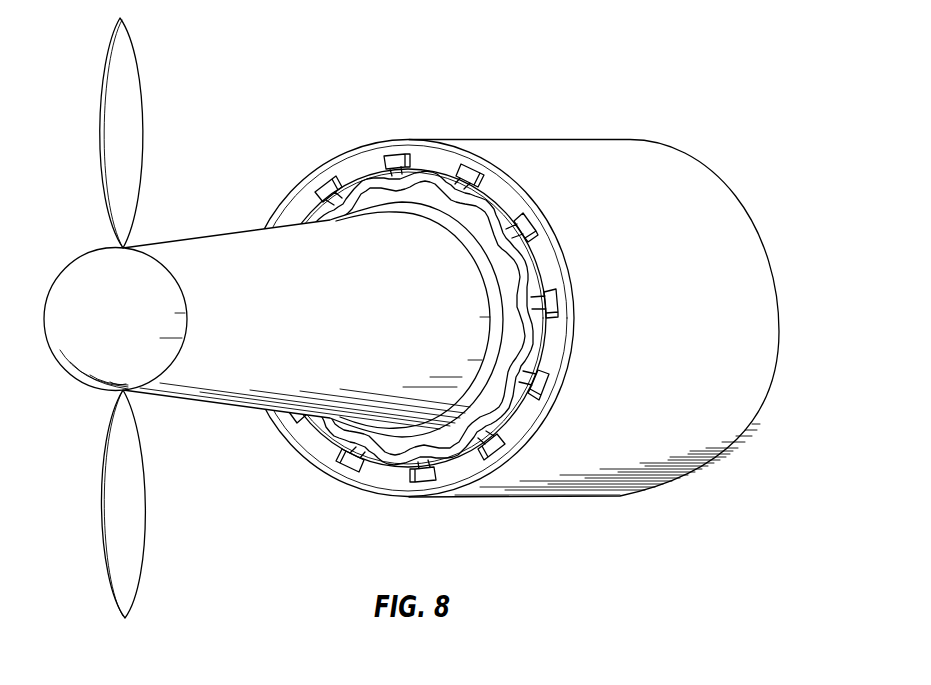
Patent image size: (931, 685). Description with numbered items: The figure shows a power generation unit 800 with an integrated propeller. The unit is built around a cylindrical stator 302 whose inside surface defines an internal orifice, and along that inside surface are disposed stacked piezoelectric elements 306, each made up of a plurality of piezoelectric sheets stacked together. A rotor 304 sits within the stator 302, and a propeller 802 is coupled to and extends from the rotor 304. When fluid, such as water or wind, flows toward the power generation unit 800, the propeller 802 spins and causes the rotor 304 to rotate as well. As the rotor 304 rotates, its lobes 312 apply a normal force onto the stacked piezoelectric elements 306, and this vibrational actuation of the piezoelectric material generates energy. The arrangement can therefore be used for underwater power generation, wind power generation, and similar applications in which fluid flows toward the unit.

The power generation unit 800 is at (689, 58).
The stator 302 is at (358, 162).
The rotor 304 is at (415, 185).
The stacked piezoelectric elements 306 is at (322, 185).
The lobes 312 is at (389, 455).
The propeller 802 is at (218, 383).